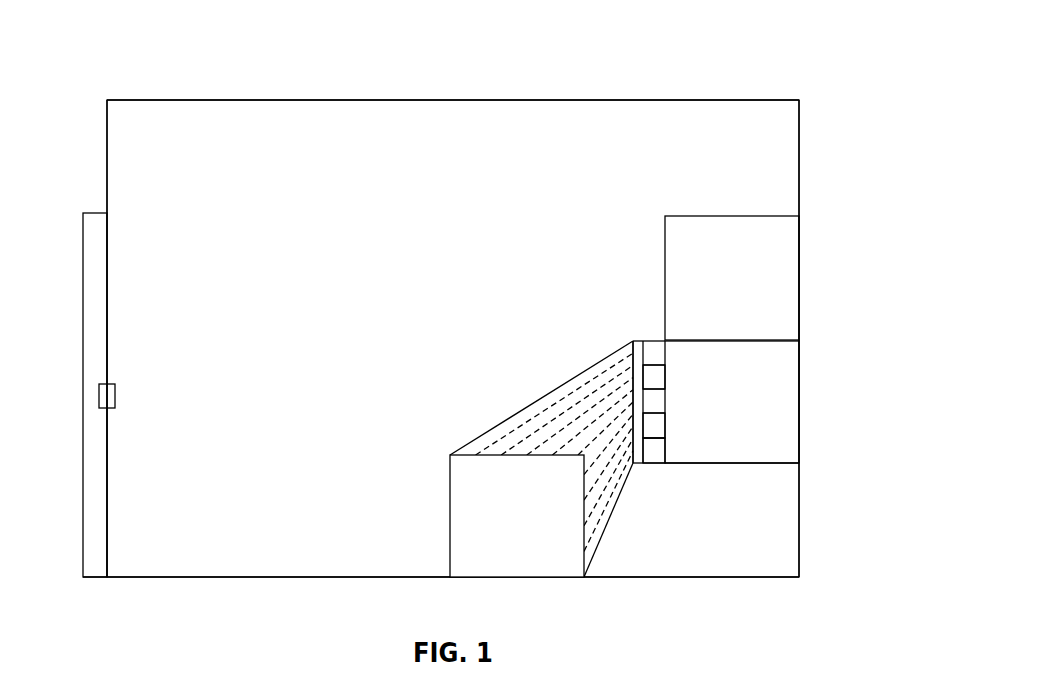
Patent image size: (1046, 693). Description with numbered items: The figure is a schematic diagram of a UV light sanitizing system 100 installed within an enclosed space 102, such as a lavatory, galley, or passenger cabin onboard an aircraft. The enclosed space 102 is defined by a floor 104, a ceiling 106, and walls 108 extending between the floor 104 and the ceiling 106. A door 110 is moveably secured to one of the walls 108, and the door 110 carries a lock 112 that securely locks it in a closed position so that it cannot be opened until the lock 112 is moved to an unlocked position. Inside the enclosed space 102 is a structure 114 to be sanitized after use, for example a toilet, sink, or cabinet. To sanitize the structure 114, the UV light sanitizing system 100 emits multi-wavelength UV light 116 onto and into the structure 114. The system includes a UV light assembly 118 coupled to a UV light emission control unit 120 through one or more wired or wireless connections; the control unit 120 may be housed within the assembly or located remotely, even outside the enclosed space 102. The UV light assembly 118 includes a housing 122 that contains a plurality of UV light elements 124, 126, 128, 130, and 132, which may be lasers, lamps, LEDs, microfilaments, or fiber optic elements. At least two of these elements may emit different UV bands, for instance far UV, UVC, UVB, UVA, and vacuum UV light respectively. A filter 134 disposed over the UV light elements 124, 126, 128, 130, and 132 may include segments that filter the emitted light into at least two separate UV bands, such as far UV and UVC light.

The UV light sanitizing system 100 is at (708, 192).
The enclosed space 102 is at (736, 96).
The floor 104 is at (228, 577).
The ceiling 106 is at (370, 100).
The walls 108 is at (799, 147).
The door 110 is at (97, 213).
The lock 112 is at (115, 396).
The structure 114 is at (450, 503).
The multi-wavelength UV light 116 is at (522, 410).
The UV light assembly 118 is at (767, 463).
The UV light emission control unit 120 is at (664, 237).
The housing 122 is at (766, 445).
The UV light element 124 is at (653, 354).
The UV light element 126 is at (657, 375).
The UV light element 128 is at (653, 402).
The UV light element 130 is at (655, 427).
The UV light element 132 is at (655, 452).
The filter 134 is at (634, 341).